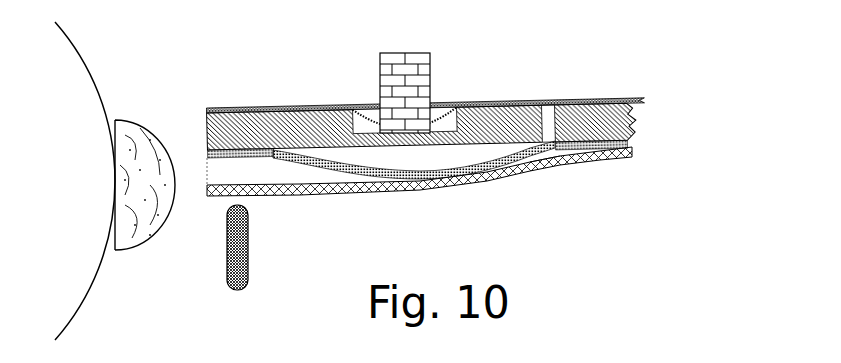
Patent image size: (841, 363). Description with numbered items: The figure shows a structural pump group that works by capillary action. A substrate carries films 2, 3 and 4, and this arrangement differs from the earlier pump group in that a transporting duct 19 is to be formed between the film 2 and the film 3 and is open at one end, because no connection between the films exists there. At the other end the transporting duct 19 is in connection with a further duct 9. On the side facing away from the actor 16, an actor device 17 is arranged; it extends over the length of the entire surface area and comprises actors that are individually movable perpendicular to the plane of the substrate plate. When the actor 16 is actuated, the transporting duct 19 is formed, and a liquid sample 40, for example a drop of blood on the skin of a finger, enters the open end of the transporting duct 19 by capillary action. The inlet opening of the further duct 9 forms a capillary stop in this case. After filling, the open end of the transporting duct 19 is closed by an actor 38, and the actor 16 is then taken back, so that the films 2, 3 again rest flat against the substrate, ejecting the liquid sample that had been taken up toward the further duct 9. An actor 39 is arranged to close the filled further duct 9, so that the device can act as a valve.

The film 2 is at (502, 174).
The film 3 is at (556, 165).
The film 4 is at (518, 100).
The further duct 9 is at (590, 105).
The actor 16 is at (431, 55).
The actor device 17 is at (638, 124).
The transporting duct 19 is at (270, 173).
The actor 38 is at (227, 267).
The actor 39 is at (208, 172).
The liquid sample 40 is at (130, 120).